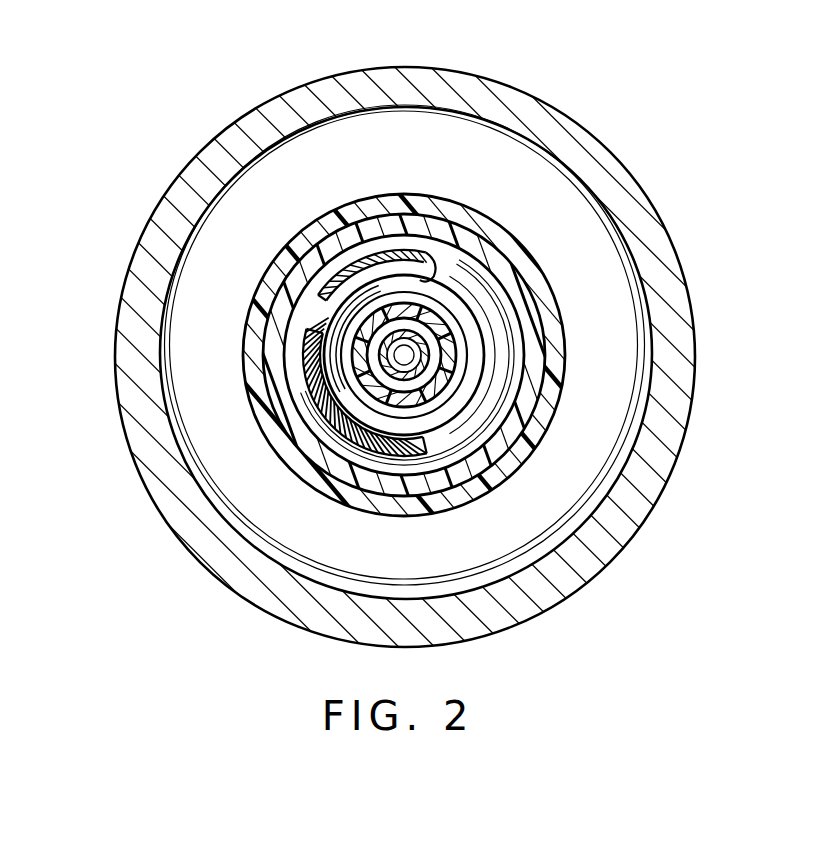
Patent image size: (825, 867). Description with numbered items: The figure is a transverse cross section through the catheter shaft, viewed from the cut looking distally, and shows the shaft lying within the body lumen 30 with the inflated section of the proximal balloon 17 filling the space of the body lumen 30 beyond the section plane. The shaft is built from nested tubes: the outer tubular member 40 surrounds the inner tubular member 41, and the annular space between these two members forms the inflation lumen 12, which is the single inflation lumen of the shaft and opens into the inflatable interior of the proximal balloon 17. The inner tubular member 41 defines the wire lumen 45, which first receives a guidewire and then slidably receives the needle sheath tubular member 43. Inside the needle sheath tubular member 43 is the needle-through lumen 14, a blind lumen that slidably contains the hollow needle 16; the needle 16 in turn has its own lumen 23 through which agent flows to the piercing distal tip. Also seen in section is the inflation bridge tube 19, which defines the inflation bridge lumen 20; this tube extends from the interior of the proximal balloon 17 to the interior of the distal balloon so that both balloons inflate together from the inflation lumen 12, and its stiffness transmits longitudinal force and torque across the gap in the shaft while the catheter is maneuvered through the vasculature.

The inflation lumen 12 is at (312, 425).
The needle-through lumen 14 is at (397, 390).
The hollow needle 16 is at (427, 370).
The proximal balloon 17 is at (437, 197).
The inflation bridge tube 19 is at (460, 247).
The inflation bridge lumen 20 is at (378, 272).
The needle lumen 23 is at (340, 288).
The body lumen 30 is at (222, 196).
The outer tubular member 40 is at (470, 232).
The inner tubular member 41 is at (478, 363).
The needle sheath tubular member 43 is at (443, 395).
The wire lumen 45 is at (460, 337).